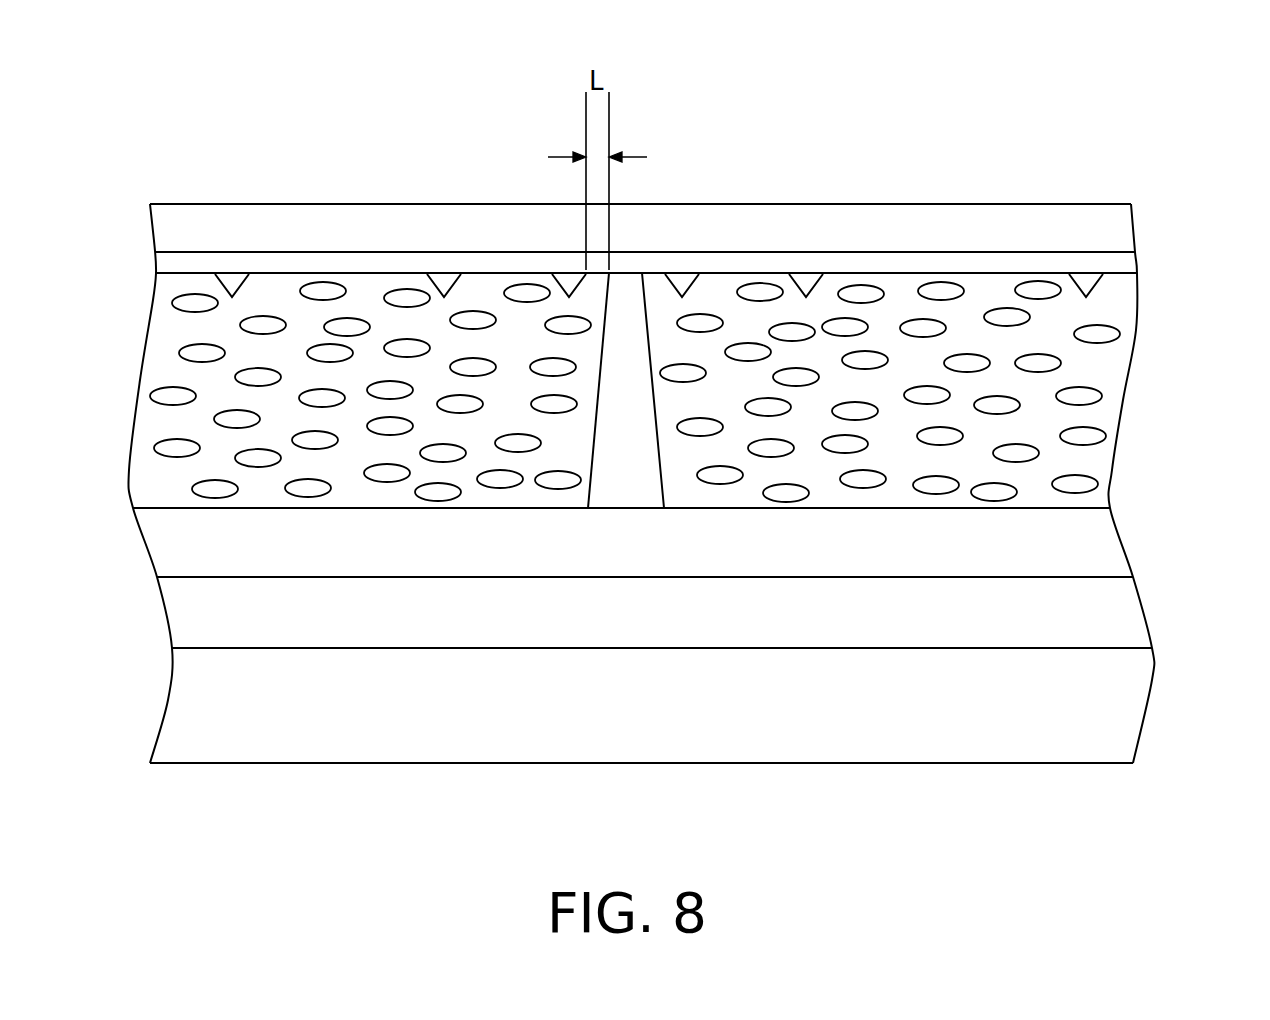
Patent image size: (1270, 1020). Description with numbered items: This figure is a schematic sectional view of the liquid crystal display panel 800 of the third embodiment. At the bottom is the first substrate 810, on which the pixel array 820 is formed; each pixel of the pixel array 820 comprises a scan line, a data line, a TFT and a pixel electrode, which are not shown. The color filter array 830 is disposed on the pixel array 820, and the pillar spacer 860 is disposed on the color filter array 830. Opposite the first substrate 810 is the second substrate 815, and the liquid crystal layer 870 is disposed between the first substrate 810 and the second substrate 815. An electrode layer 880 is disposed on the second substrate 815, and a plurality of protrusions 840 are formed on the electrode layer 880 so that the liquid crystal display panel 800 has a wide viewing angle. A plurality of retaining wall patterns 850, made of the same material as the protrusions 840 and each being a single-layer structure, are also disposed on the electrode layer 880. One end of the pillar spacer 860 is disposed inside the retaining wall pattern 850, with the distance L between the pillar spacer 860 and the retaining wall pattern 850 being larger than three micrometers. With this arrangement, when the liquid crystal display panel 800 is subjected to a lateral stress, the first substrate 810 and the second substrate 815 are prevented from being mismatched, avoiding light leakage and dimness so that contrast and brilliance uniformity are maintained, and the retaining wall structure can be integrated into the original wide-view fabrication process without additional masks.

The liquid crystal display panel 800 is at (1269, 857).
The first substrate 810 is at (1125, 705).
The second substrate 815 is at (1108, 228).
The pixel array 820 is at (1118, 618).
The color filter array 830 is at (1093, 542).
The protrusions 840 is at (1088, 283).
The retaining wall pattern 850 is at (681, 293).
The pillar spacer 860 is at (629, 298).
The liquid crystal layer 870 is at (1085, 438).
The electrode layer 880 is at (1113, 263).